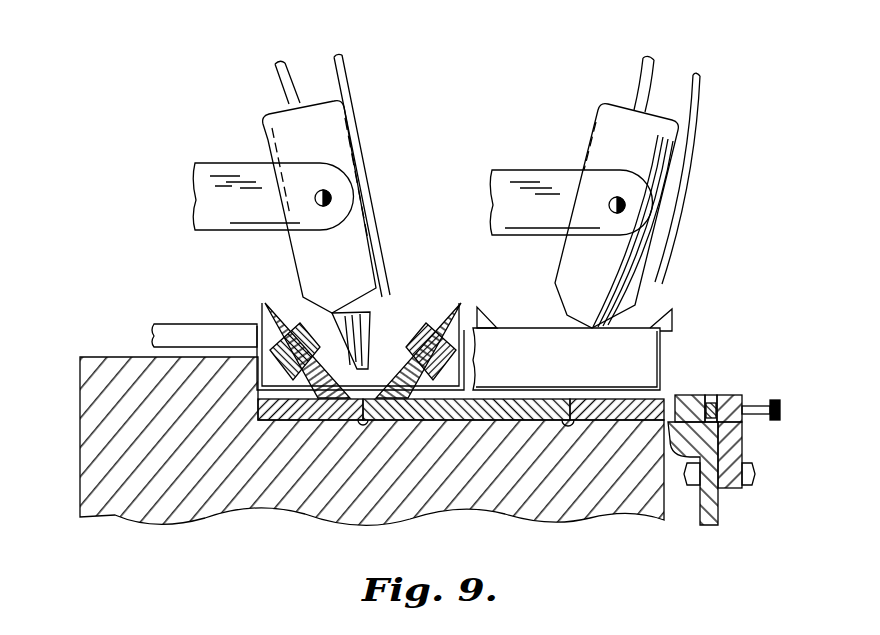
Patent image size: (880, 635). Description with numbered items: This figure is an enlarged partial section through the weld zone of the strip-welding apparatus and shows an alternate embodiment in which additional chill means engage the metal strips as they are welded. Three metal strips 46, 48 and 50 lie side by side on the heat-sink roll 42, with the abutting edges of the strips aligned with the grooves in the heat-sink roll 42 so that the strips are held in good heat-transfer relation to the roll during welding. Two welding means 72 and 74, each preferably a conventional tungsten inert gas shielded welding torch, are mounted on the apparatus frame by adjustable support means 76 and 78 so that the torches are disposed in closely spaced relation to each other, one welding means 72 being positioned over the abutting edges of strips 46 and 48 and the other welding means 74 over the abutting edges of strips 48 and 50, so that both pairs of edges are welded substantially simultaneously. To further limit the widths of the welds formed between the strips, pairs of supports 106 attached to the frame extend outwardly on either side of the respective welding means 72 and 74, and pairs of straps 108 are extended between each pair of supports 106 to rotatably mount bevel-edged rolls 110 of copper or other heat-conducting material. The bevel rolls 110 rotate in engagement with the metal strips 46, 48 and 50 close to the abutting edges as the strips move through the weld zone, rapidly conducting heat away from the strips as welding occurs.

The heat-sink roll 42 is at (78, 443).
The metal strip 46 is at (318, 412).
The metal strip 48 is at (482, 418).
The metal strip 50 is at (630, 423).
The welding means 72 is at (358, 266).
The welding means 74 is at (615, 253).
The support means 76 is at (232, 151).
The support means 78 is at (539, 178).
The support 106 is at (180, 333).
The strap 108 is at (275, 352).
The bevel-edged roll 110 is at (264, 304).